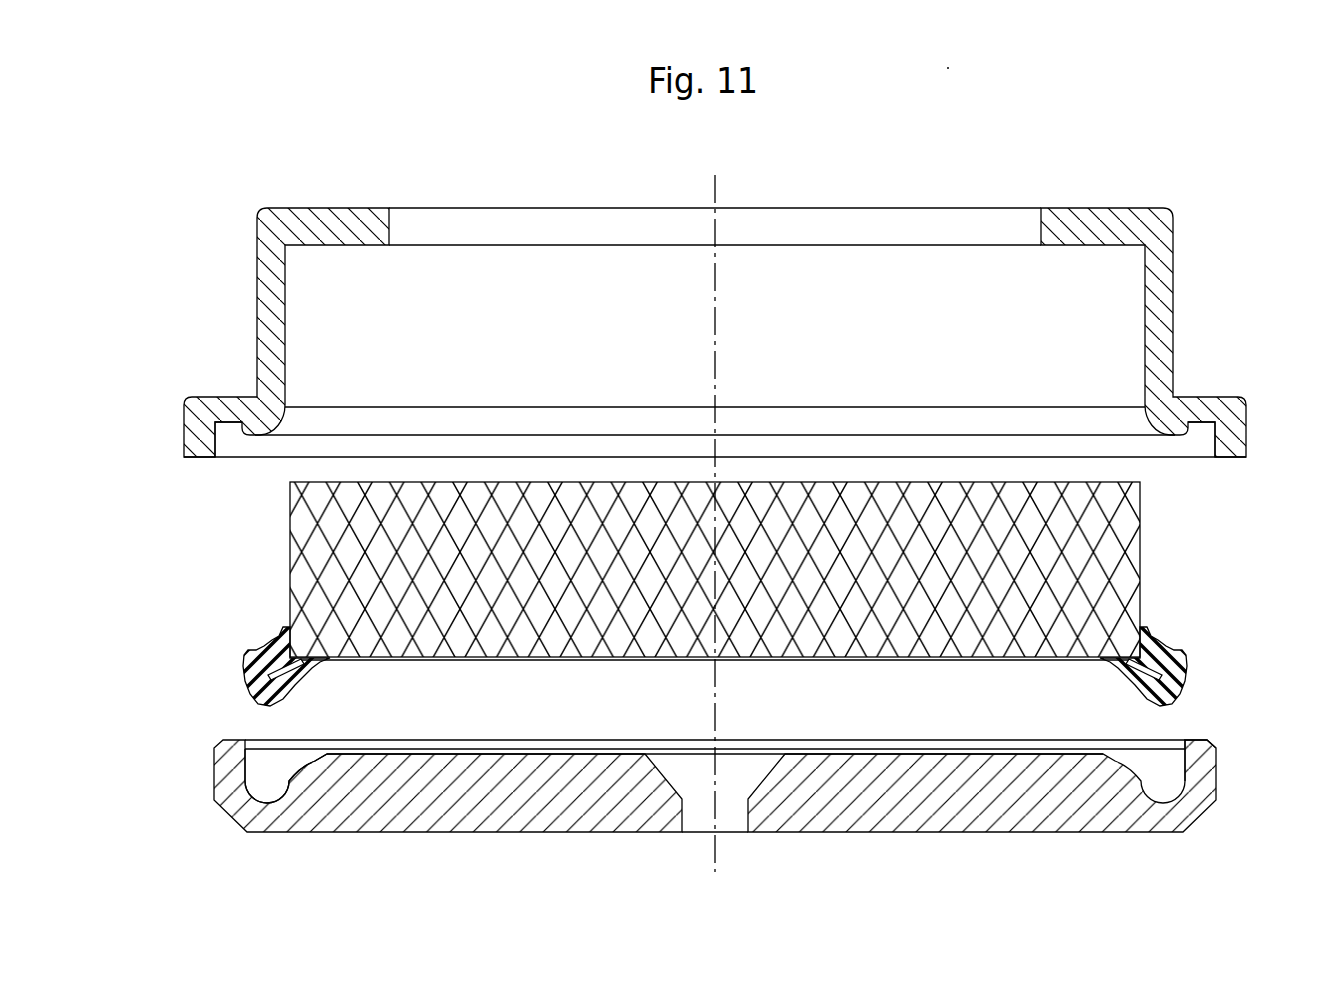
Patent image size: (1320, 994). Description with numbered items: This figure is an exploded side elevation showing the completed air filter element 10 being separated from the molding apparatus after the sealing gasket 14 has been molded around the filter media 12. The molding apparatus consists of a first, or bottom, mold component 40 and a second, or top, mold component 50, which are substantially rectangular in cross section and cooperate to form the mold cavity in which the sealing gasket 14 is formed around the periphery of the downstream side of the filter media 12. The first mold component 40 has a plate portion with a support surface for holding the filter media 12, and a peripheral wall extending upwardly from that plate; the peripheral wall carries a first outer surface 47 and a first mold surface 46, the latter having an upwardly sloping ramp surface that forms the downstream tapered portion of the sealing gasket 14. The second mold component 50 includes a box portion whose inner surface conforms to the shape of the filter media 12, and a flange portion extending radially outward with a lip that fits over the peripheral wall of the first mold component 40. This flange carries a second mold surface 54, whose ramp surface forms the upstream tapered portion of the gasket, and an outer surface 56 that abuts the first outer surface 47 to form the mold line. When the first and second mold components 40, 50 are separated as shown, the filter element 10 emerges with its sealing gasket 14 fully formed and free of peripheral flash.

The air filter element 10 is at (709, 595).
The filter media 12 is at (283, 575).
The sealing gasket 14 is at (235, 672).
The first mold component 40 is at (1231, 762).
The first mold surface 46 is at (259, 763).
The first outer surface 47 is at (1182, 741).
The second mold component 50 is at (247, 299).
The second mold surface 54 is at (1140, 423).
The outer surface 56 is at (248, 455).